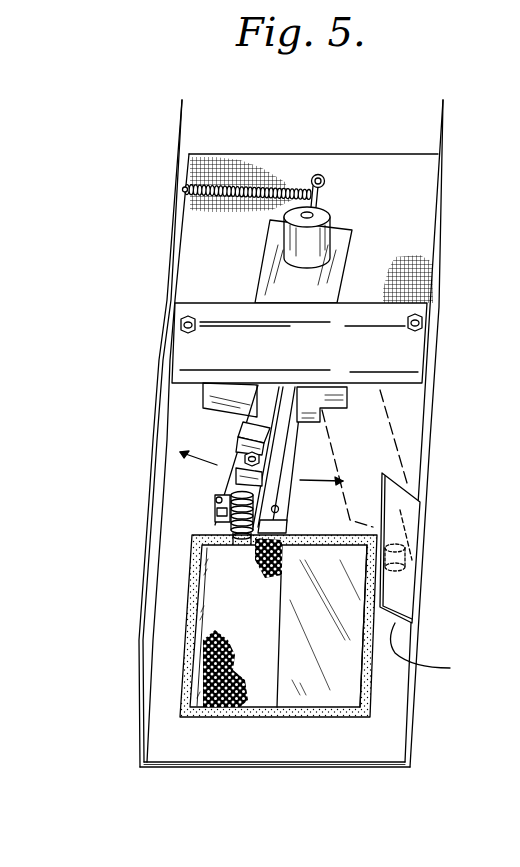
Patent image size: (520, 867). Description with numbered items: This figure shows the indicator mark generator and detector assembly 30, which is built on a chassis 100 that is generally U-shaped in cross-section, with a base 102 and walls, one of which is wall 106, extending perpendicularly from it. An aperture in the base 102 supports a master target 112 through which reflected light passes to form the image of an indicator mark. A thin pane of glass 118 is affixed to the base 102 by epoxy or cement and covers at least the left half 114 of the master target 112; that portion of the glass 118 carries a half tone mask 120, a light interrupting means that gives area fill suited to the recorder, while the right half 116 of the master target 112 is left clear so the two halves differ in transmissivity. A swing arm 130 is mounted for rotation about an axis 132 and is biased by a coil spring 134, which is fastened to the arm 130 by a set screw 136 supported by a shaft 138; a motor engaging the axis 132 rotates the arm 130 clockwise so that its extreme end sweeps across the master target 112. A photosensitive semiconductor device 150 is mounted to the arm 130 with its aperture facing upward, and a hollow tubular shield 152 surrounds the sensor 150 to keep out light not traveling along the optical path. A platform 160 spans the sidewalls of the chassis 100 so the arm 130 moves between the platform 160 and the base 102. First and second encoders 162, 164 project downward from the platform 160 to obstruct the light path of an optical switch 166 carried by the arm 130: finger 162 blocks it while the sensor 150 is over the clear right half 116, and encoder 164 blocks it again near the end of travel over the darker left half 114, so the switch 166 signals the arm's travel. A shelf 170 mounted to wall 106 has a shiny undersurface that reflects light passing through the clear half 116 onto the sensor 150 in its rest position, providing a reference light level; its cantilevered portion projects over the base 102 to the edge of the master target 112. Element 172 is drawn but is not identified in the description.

The generator/detector assembly 30 is at (420, 734).
The chassis 100 is at (430, 638).
The base 102 is at (305, 750).
The wall 106 is at (432, 412).
The master target 112 is at (177, 723).
The left half 114 is at (213, 608).
The right half 116 is at (343, 688).
The pane of glass 118 is at (335, 624).
The half tone mask 120 is at (203, 687).
The swing arm 130 is at (268, 282).
The axis 132 is at (330, 218).
The coil spring 134 is at (250, 185).
The set screw 136 is at (321, 176).
The shaft 138 is at (323, 207).
The photosensitive semiconductor device 150 is at (237, 555).
The hollow tubular shield 152 is at (223, 503).
The platform 160 is at (362, 354).
The first encoder 162 is at (318, 422).
The second encoder 164 is at (213, 405).
The optical switch 166 is at (255, 432).
The shelf 170 is at (407, 578).
The lead wire 172 is at (440, 651).